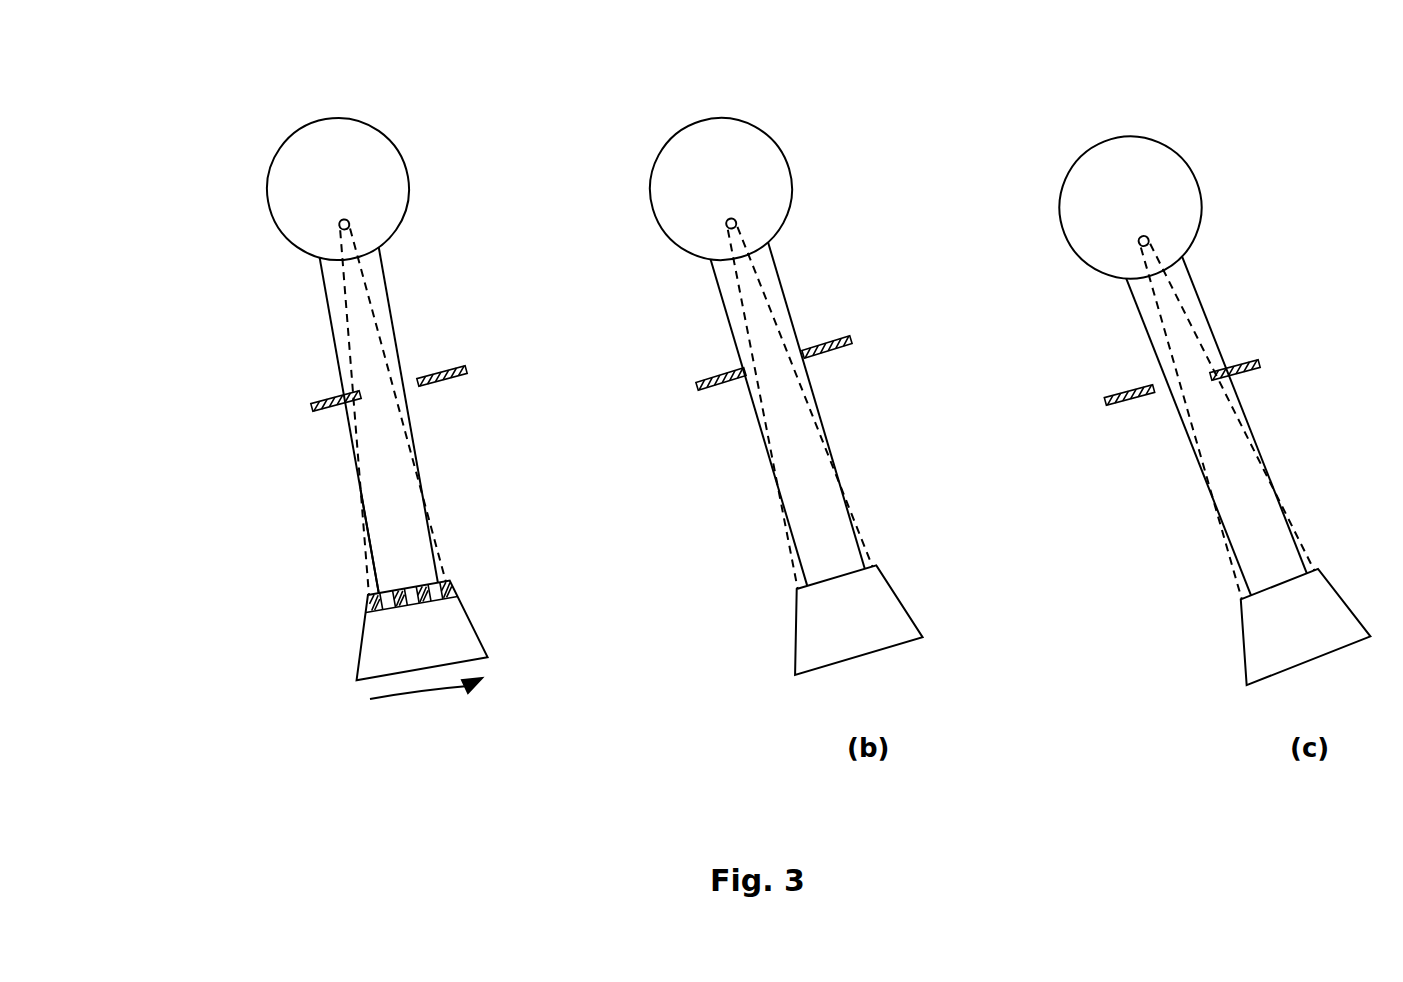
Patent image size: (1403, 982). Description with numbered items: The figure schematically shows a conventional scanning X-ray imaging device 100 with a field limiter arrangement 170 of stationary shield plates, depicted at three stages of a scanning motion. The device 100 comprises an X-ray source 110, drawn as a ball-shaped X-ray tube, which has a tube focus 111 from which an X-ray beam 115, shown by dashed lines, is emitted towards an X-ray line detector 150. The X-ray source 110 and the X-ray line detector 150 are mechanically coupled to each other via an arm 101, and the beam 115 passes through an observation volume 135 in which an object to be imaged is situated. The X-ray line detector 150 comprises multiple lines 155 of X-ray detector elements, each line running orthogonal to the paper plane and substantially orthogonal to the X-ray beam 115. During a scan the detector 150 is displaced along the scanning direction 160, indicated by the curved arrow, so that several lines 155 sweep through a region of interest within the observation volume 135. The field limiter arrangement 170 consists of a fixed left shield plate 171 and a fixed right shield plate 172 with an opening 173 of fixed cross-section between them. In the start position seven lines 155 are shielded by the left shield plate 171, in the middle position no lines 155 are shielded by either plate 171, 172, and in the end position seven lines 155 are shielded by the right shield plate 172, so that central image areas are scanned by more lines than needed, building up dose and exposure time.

The scanning X-ray imaging device 100 is at (260, 133).
The X-ray source 110 is at (388, 125).
The tube focus 111 is at (348, 221).
The arm 101 is at (385, 274).
The X-ray beam 115 is at (357, 308).
The field limiter arrangement 170 is at (312, 389).
The left shield plate 171 is at (312, 407).
The right shield plate 172 is at (452, 368).
The opening 173 is at (383, 401).
The observation volume 135 is at (342, 534).
The lines of X-ray detector elements 155 is at (367, 602).
The X-ray line detector 150 is at (338, 645).
The scanning direction 160 is at (410, 700).